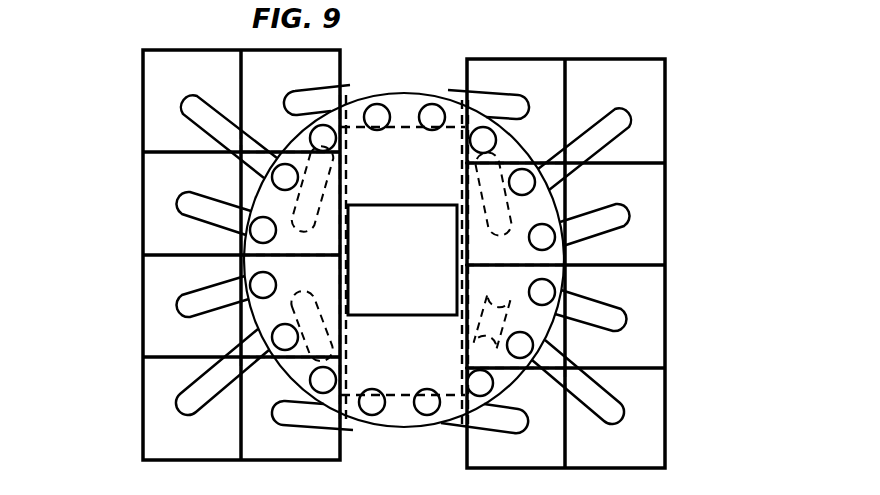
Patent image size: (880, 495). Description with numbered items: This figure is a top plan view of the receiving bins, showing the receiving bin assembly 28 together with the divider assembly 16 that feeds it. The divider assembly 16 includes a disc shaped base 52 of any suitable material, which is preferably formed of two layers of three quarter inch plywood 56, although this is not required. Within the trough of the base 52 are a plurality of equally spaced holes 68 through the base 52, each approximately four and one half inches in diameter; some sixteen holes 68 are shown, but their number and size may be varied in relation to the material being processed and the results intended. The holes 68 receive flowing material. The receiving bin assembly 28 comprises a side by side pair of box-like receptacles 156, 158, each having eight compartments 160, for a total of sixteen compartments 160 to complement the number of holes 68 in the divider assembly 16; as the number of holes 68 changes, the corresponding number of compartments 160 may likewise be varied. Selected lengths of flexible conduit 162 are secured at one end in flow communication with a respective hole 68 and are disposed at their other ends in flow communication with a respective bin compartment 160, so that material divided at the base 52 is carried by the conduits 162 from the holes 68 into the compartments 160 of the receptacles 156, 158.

The divider assembly 16 is at (402, 72).
The receiving bin assembly 28 is at (682, 160).
The disc shaped base 52 is at (418, 96).
The plywood layer 56 is at (382, 313).
The holes 68 is at (379, 127).
The box-like receptacle 156 is at (665, 289).
The box-like receptacle 158 is at (143, 262).
The compartments 160 is at (201, 62).
The flexible conduit 162 is at (190, 105).